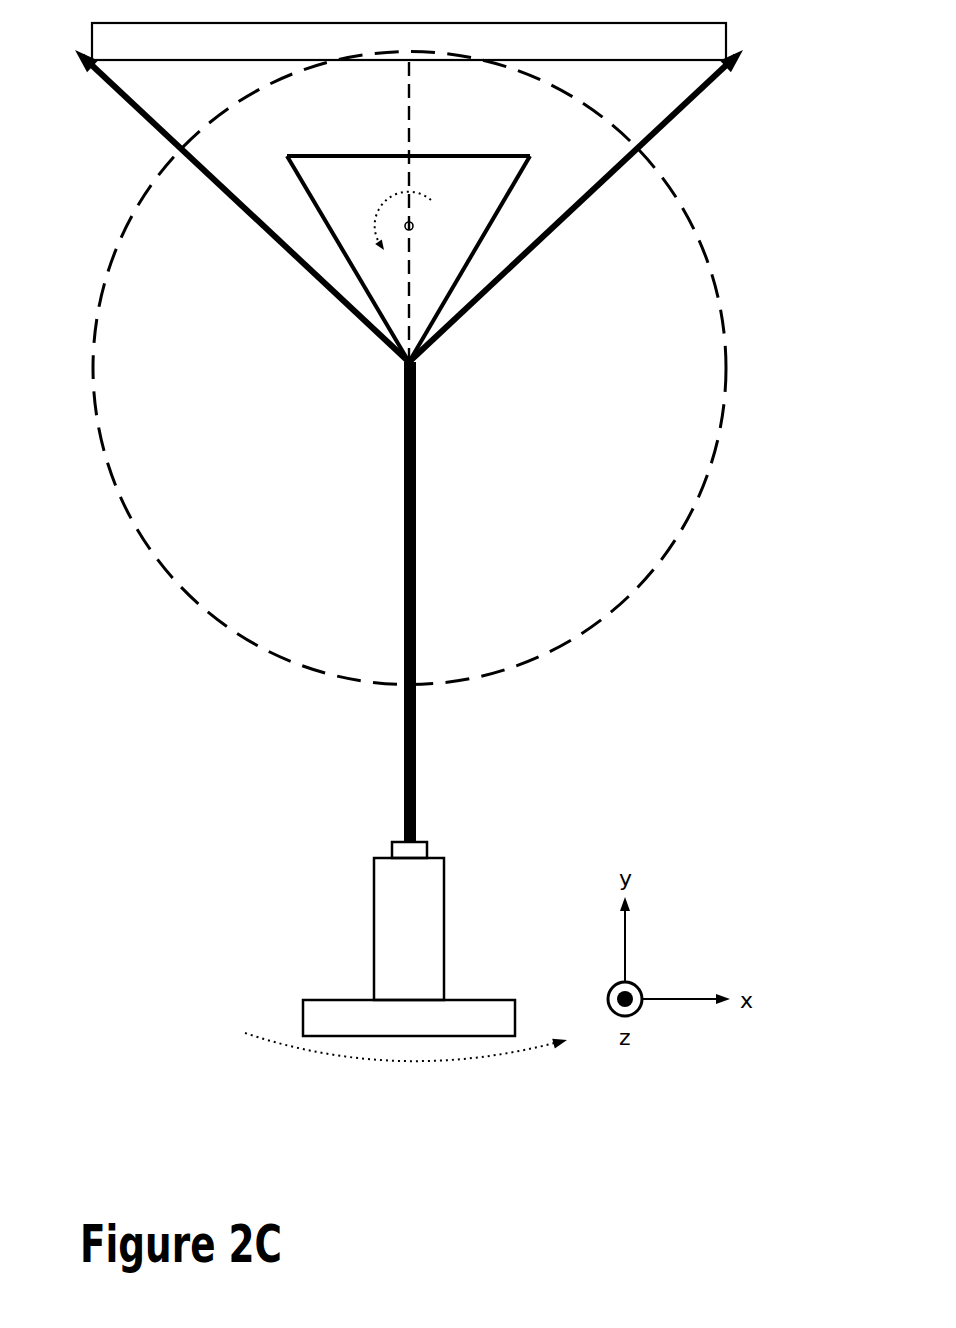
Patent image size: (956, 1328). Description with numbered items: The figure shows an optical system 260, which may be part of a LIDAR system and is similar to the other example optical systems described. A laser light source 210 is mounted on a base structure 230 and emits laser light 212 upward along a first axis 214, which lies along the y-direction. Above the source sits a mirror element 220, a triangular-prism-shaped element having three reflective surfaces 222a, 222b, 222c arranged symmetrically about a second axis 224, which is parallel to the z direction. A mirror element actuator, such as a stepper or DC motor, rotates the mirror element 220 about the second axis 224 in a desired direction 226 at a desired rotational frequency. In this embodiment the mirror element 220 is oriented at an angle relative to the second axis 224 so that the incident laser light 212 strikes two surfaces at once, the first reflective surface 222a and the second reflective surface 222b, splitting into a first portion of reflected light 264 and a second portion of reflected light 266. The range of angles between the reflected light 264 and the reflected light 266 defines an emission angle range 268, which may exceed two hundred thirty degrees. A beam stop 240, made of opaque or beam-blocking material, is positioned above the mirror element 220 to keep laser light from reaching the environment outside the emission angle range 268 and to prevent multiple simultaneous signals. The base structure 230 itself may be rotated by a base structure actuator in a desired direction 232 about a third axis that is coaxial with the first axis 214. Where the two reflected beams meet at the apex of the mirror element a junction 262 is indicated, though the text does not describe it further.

The laser light source 210 is at (452, 921).
The laser light 212 is at (363, 602).
The first axis 214 is at (362, 212).
The mirror element 220 is at (380, 218).
The first reflective surface 222a is at (492, 259).
The second reflective surface 222b is at (296, 238).
The reflective surface 222c is at (420, 131).
The second axis 224 is at (489, 182).
The desired direction 226 is at (337, 243).
The base structure 230 is at (429, 996).
The desired direction 232 is at (406, 1069).
The beam stop 240 is at (409, 64).
The optical system 260 is at (806, 118).
The pivot joint 262 is at (450, 381).
The reflected light 264 is at (231, 206).
The reflected light 266 is at (586, 206).
The emission angle range 268 is at (409, 385).